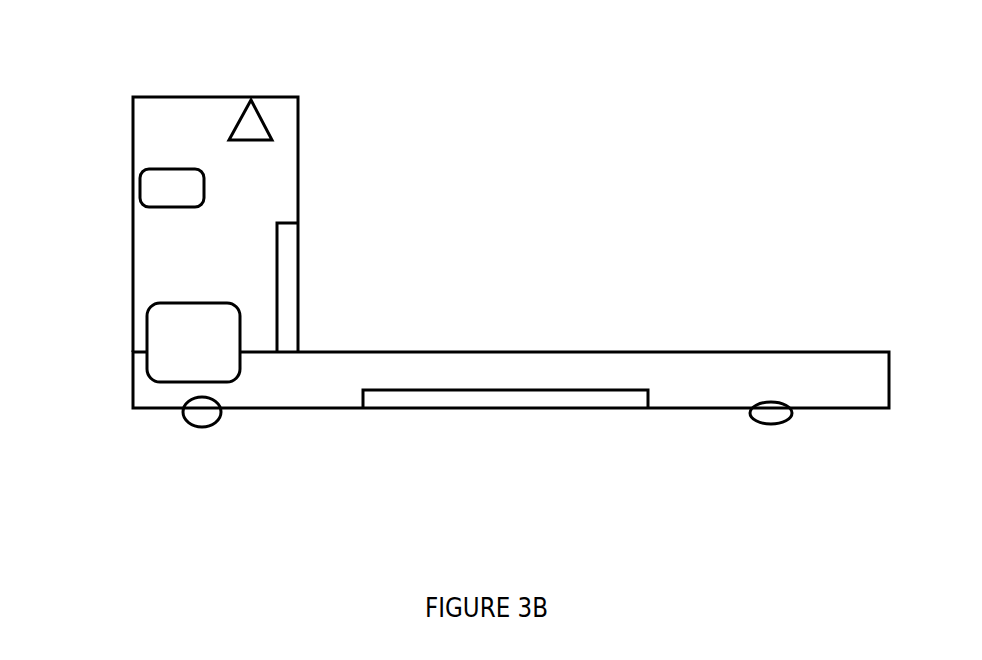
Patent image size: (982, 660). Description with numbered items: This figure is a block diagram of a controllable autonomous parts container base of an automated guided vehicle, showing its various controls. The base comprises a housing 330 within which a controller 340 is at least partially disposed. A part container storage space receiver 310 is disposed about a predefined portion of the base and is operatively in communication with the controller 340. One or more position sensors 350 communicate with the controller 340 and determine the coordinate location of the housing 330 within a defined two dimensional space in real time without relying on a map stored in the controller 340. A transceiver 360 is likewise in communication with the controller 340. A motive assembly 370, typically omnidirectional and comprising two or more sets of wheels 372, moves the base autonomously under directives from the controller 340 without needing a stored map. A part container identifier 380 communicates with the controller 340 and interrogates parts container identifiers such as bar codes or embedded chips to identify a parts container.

The part container storage space receiver 310 is at (522, 330).
The housing 330 is at (133, 143).
The controller 340 is at (165, 187).
The position sensor 350 is at (447, 393).
The transceiver 360 is at (251, 100).
The motive assembly 370 is at (163, 333).
The wheels 372 is at (183, 425).
The part container identifier 380 is at (289, 332).